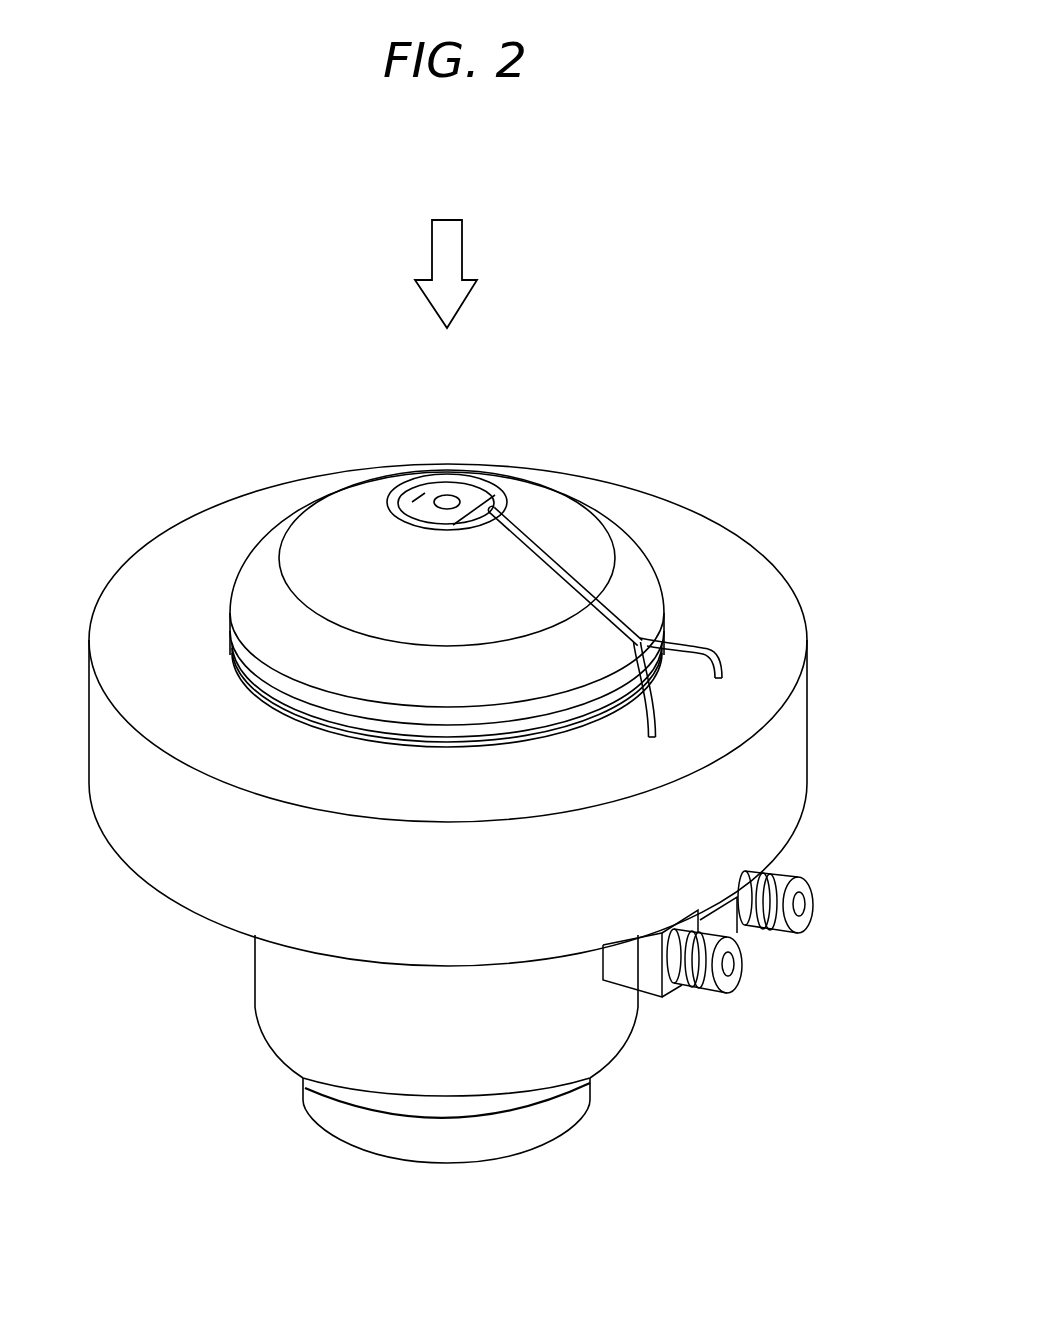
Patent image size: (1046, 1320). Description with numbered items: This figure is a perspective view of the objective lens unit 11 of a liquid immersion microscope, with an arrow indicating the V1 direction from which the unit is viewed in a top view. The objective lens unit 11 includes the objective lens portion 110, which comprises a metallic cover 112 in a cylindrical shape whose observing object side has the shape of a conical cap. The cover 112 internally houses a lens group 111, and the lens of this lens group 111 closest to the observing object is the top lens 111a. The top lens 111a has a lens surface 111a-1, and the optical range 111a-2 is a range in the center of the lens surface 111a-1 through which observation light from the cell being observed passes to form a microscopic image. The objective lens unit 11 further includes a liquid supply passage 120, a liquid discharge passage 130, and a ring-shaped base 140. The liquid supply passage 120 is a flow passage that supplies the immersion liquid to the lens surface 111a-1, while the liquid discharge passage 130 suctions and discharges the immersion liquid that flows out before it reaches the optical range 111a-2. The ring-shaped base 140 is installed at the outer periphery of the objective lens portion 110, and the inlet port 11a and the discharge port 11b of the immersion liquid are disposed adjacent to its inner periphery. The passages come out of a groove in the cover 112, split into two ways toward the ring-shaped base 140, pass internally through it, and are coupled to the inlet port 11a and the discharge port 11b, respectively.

The objective lens unit 11 is at (467, 131).
The V1 direction V1 is at (462, 250).
The objective lens portion 110 is at (262, 525).
The lens group 111 is at (480, 488).
The top lens 111a is at (446, 503).
The lens surface 111a-1 is at (415, 494).
The optical range 111a-2 is at (445, 492).
The cover 112 is at (578, 505).
The liquid supply passage 120 is at (650, 733).
The liquid discharge passage 130 is at (707, 645).
The ring-shaped base 140 is at (805, 711).
The inlet port 11a is at (716, 990).
The discharge port 11b is at (803, 880).